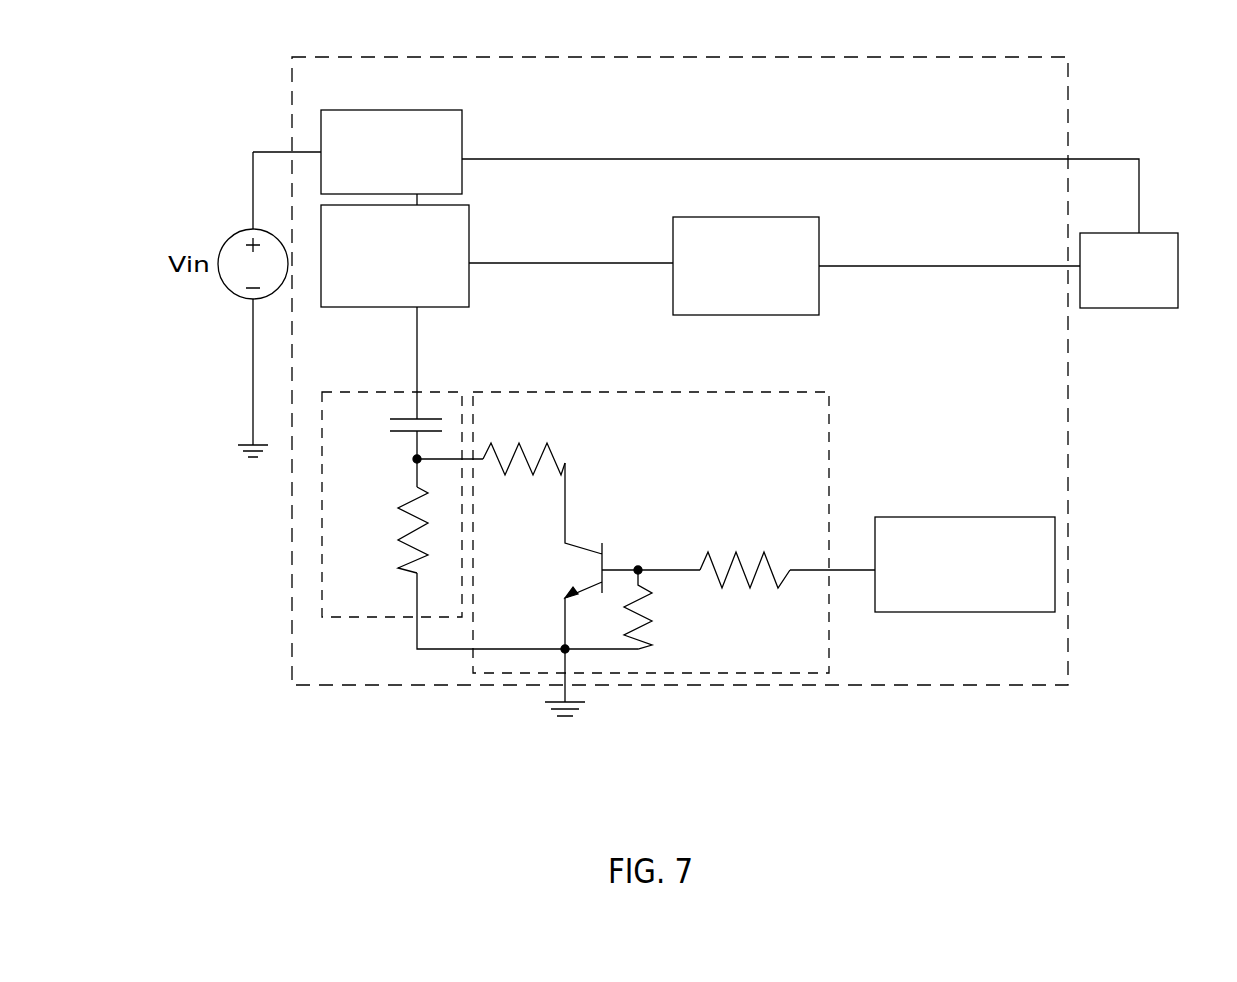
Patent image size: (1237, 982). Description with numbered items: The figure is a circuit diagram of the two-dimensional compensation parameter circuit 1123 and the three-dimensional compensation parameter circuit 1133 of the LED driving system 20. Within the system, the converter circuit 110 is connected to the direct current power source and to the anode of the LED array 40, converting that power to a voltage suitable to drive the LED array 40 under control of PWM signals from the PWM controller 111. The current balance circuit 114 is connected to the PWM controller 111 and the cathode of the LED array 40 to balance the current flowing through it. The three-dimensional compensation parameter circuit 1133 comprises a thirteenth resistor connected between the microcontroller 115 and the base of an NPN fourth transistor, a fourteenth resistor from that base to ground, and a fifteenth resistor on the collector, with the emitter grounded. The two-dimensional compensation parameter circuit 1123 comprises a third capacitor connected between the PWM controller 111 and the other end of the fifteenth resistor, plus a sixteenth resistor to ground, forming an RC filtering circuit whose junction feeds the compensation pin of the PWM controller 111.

The LED driving system 20 is at (612, 57).
The converter circuit 110 is at (375, 110).
The pulse width modulator (PWM) controller 111 is at (469, 245).
The current balance circuit 114 is at (708, 217).
The microcontroller 115 is at (945, 517).
The LED array 40 is at (1165, 233).
The 2D compensation parameter circuit 1123 is at (450, 392).
The 3D compensation parameter circuit 1133 is at (617, 392).